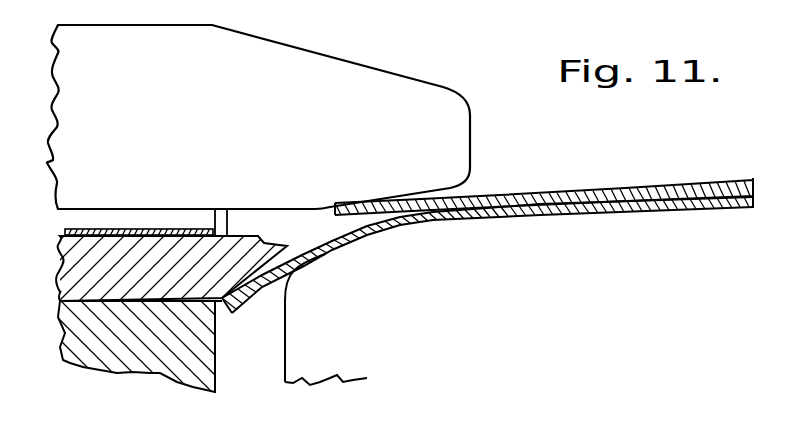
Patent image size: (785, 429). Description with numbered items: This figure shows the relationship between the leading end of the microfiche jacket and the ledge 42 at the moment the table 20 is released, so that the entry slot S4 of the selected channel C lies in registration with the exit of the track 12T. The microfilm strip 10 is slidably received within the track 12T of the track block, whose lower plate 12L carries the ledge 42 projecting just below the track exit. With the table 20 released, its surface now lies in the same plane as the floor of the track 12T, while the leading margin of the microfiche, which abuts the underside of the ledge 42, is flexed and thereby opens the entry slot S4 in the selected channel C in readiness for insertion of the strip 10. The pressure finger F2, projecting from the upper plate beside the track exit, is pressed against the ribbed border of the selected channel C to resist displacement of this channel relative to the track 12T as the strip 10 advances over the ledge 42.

The microfilm strip 10 is at (130, 230).
The track 12T is at (226, 233).
The lower plate 12L is at (173, 362).
The ledge 42 is at (240, 253).
The entry slot S4 is at (328, 208).
The pressure finger F2 is at (452, 108).
The selected channel C is at (388, 218).
The table 20 is at (307, 353).